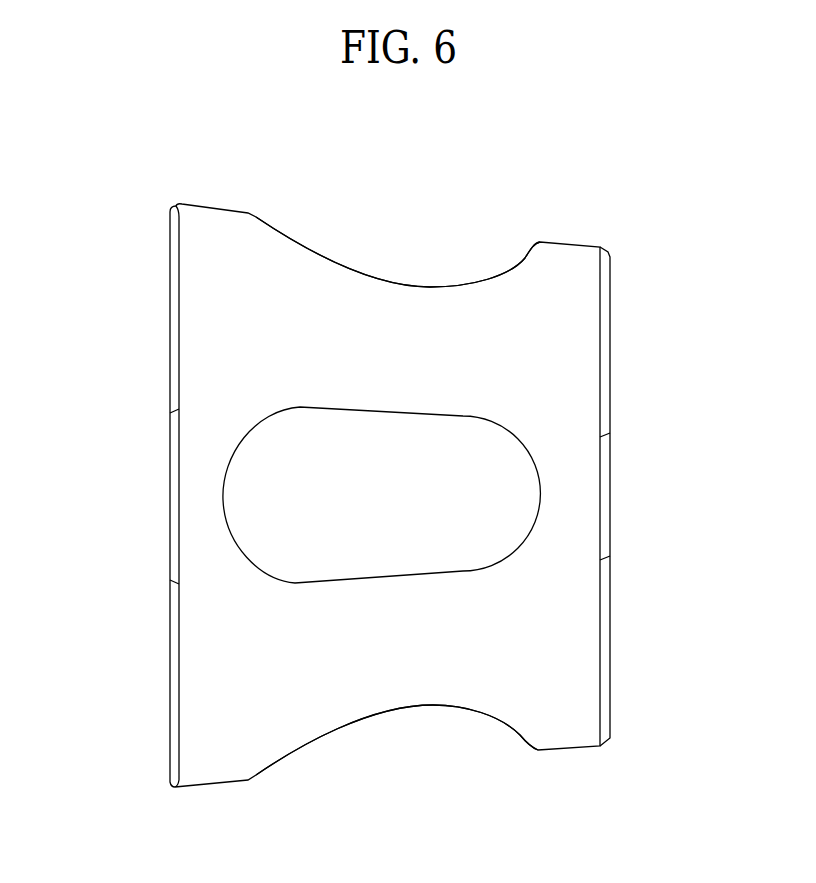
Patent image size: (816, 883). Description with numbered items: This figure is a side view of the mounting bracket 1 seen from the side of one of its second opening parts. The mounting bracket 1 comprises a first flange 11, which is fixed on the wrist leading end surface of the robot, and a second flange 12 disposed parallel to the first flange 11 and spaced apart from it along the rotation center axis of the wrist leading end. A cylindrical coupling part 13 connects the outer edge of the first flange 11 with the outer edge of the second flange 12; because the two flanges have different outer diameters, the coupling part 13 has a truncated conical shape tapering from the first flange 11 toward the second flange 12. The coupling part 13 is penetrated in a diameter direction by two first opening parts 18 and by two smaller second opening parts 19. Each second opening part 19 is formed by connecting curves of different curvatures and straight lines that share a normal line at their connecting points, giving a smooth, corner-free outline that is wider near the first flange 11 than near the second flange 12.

The mounting bracket 1 is at (110, 168).
The first flange 11 is at (156, 391).
The second flange 12 is at (626, 398).
The coupling part 13 is at (286, 742).
The first opening part 18 is at (427, 285).
The second opening part 19 is at (283, 580).